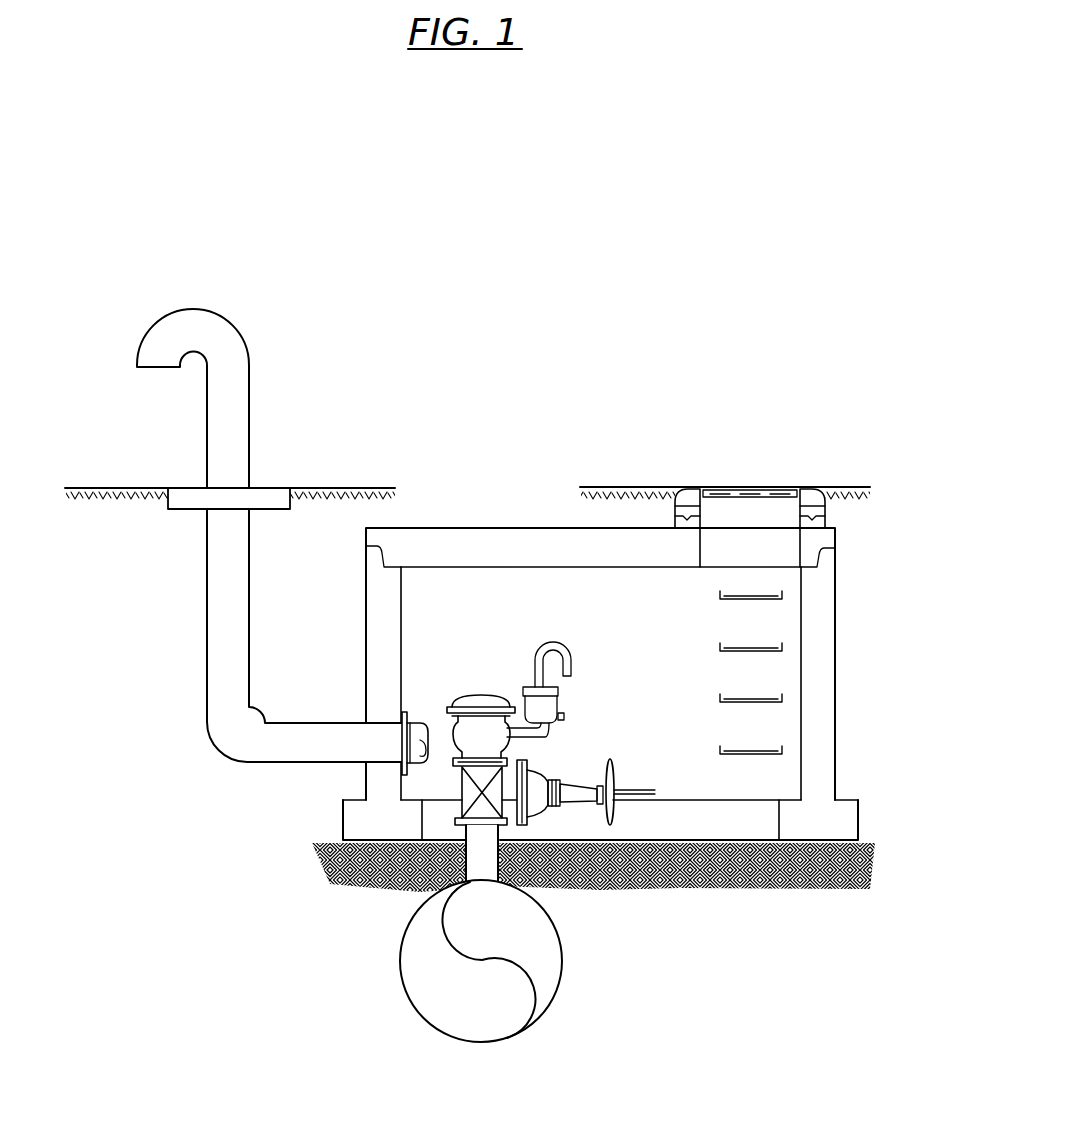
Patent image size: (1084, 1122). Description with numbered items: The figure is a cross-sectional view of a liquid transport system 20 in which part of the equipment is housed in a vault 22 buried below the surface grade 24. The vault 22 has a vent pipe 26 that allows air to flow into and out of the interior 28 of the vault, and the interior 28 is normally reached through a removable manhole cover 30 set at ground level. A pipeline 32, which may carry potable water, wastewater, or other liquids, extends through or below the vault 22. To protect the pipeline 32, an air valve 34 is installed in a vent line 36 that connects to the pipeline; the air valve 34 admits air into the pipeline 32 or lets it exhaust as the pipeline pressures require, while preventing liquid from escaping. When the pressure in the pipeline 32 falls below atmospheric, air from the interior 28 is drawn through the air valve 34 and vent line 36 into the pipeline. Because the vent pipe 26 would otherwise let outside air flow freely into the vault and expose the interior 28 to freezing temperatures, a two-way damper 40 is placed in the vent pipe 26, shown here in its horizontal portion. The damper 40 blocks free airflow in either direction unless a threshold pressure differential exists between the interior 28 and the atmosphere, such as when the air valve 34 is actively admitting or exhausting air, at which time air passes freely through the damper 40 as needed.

The liquid transport system 20 is at (742, 382).
The vault 22 is at (835, 636).
The surface grade 24 is at (338, 488).
The vent pipe 26 is at (249, 430).
The interior of the vault 28 is at (470, 588).
The removable manhole cover 30 is at (755, 490).
The pipeline 32 is at (552, 997).
The air valve 34 is at (515, 748).
The vent line 36 is at (500, 860).
The two-way damper 40 is at (413, 720).